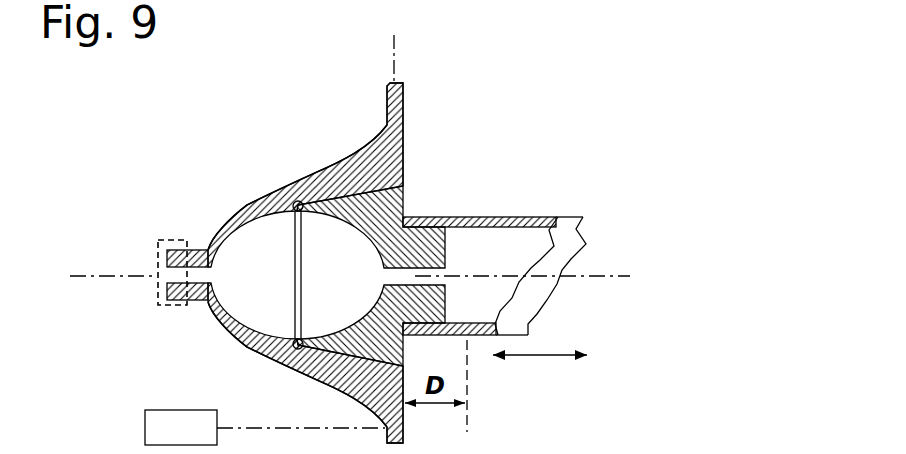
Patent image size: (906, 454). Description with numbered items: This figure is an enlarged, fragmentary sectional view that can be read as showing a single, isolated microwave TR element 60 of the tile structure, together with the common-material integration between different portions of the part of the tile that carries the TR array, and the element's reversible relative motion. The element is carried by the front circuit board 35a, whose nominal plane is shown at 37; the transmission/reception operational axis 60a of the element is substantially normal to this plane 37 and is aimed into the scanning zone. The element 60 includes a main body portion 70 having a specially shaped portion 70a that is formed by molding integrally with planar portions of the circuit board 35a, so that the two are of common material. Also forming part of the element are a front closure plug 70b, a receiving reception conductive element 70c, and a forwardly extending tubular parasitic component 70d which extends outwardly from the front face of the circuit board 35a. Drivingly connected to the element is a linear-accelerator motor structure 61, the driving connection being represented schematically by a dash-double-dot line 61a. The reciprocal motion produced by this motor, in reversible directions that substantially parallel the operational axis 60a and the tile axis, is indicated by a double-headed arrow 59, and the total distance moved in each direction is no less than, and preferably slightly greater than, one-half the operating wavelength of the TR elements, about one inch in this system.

The nominal plane of board 35a 37 is at (399, 72).
The microwave TR element 60 is at (468, 108).
The TR operational axis 60a is at (108, 278).
The circuit board 35a is at (386, 110).
The main body portion 70 is at (296, 168).
The specially shaped portion 70a is at (232, 213).
The front closure plug 70b is at (466, 203).
The receiving reception conductive element 70c is at (170, 240).
The tubular parasitic component 70d is at (583, 211).
The linear-accelerator motor structure 61 is at (180, 410).
The dash-double-dot line 61a is at (312, 427).
The double-headed arrow 59 is at (528, 357).